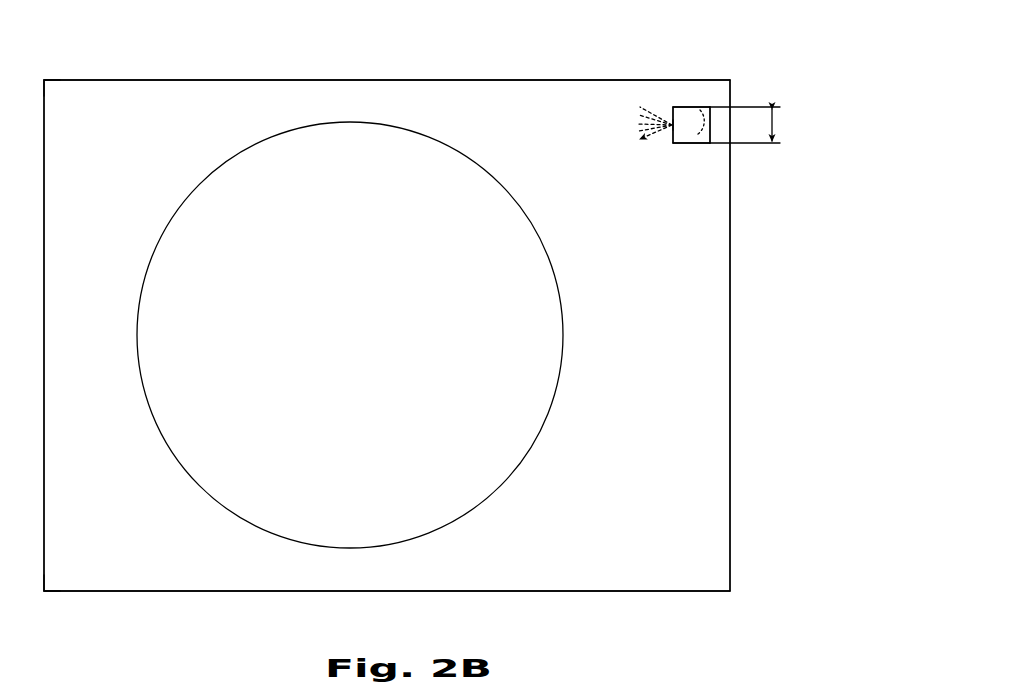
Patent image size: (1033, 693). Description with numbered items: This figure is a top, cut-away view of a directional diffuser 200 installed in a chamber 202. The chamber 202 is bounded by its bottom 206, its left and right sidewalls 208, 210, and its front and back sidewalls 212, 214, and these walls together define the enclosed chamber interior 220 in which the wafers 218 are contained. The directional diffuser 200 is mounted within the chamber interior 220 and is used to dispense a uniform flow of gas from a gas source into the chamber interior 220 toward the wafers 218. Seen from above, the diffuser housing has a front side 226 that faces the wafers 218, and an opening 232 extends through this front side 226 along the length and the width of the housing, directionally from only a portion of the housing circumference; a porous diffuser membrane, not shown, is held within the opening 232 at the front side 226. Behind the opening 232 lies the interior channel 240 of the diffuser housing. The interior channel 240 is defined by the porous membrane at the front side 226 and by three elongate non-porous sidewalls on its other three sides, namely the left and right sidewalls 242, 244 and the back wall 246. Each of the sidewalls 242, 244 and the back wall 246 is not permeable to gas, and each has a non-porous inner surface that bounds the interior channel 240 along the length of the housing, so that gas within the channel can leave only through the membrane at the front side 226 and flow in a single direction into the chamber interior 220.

The directional diffuser 200 is at (667, 96).
The chamber 202 is at (748, 282).
The bottom 206 is at (86, 123).
The left sidewall 208 is at (45, 370).
The right sidewall 210 is at (729, 368).
The front sidewall 212 is at (543, 79).
The back sidewall 214 is at (480, 590).
The wafers 218 is at (374, 253).
The chamber interior 220 is at (100, 544).
The front side 226 is at (672, 136).
The opening 232 is at (672, 113).
The interior channel 240 is at (700, 128).
The left sidewall 242 is at (692, 103).
The right sidewall 244 is at (689, 148).
The back wall 246 is at (718, 129).